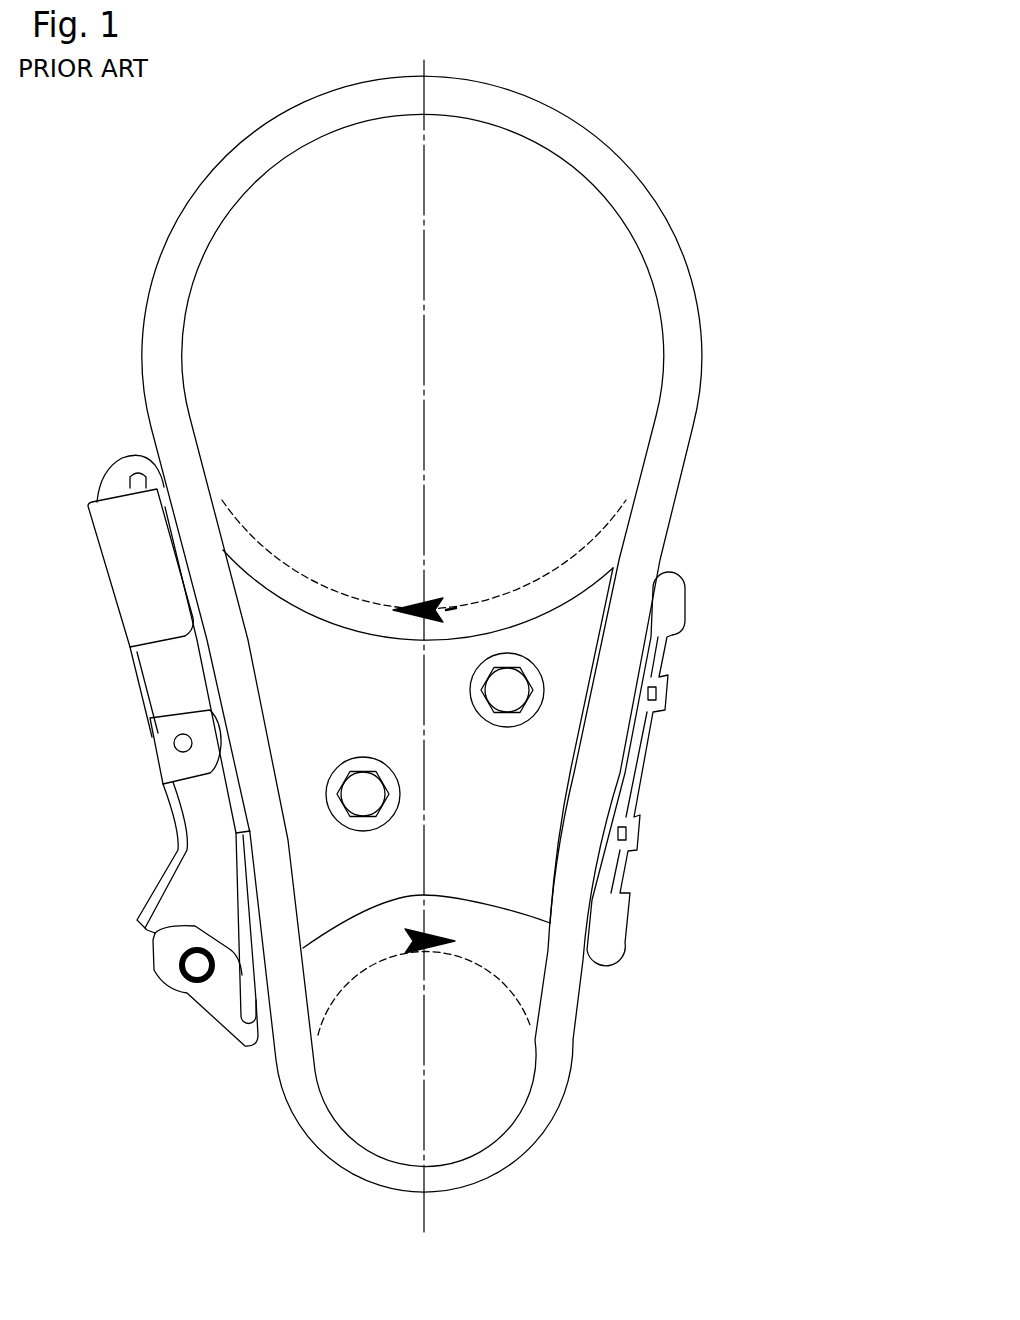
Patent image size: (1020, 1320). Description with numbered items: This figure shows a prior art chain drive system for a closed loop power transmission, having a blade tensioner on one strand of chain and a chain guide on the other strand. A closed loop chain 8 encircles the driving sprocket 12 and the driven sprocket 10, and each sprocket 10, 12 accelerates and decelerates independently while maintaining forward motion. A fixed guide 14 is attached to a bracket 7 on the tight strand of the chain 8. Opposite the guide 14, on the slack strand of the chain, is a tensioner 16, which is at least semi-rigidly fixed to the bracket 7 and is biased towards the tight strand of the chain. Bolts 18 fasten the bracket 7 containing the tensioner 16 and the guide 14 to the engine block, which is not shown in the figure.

The bracket 7 is at (527, 789).
The closed loop chain 8 is at (500, 113).
The driven sprocket 10 is at (552, 233).
The driving sprocket 12 is at (500, 1102).
The fixed guide 14 is at (662, 606).
The tensioner 16 is at (198, 880).
The bolts 18 is at (435, 760).